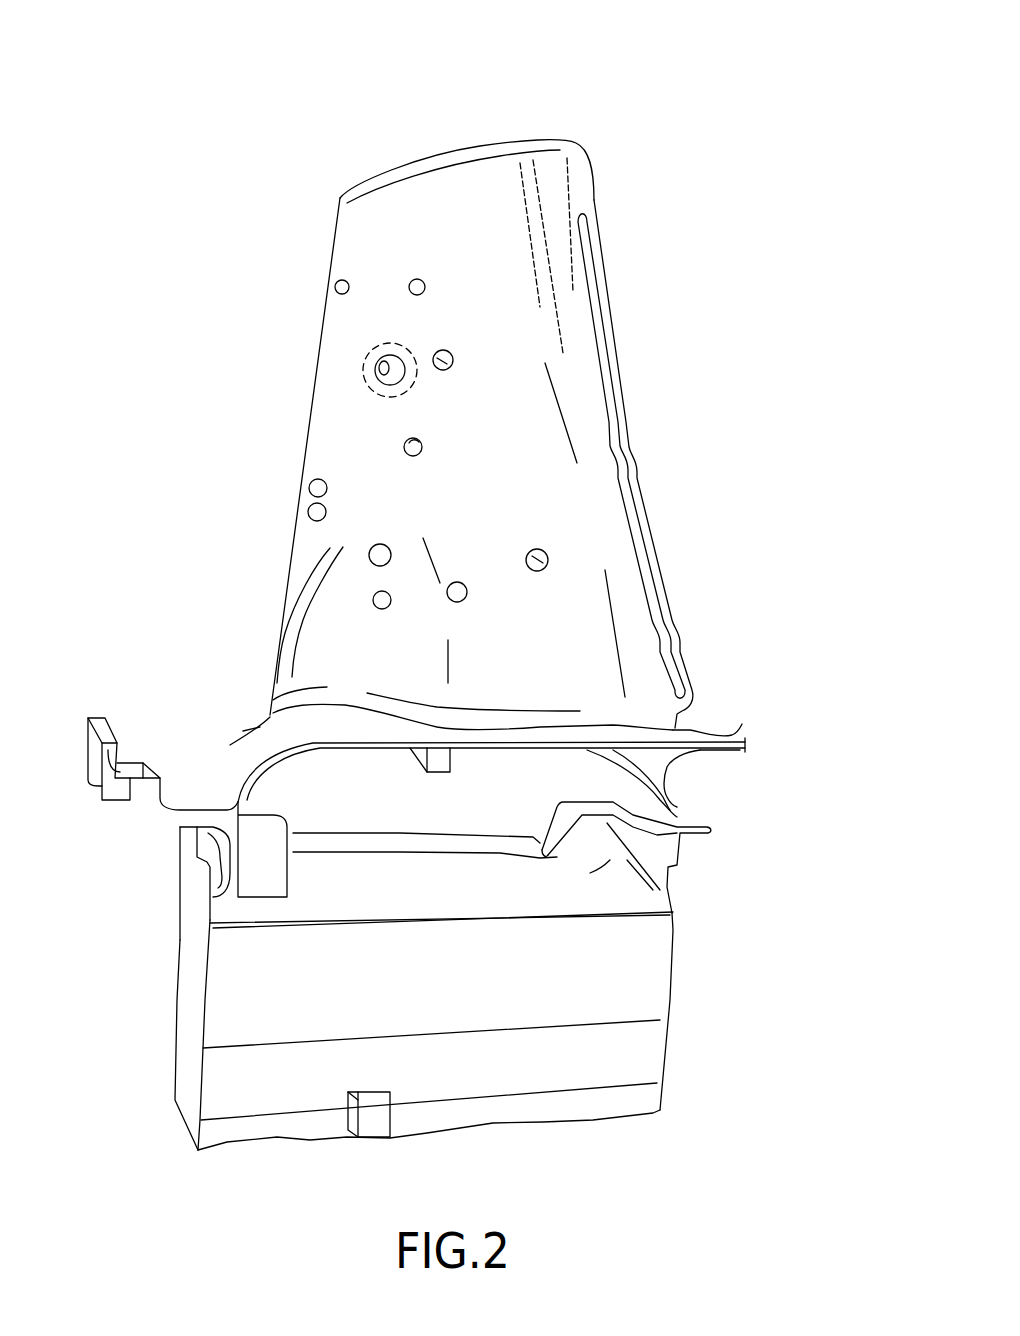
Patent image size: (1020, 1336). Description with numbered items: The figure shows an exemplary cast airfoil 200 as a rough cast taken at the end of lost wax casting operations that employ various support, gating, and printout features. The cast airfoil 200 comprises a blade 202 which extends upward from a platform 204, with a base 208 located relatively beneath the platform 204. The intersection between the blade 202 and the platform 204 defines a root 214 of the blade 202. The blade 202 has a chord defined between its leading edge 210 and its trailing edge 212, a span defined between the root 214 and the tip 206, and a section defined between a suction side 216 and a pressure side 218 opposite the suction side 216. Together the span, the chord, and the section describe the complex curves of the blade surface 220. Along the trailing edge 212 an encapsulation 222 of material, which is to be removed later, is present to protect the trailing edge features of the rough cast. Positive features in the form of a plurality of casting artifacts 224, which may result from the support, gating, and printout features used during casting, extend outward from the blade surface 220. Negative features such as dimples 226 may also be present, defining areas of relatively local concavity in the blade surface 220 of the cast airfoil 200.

The cast airfoil 200 is at (672, 83).
The blade 202 is at (594, 183).
The platform 204 is at (735, 737).
The tip 206 is at (447, 155).
The base 208 is at (462, 1004).
The leading edge 210 is at (320, 337).
The trailing edge 212 is at (606, 318).
The root 214 is at (267, 702).
The suction side 216 is at (343, 432).
The pressure side 218 is at (627, 384).
The blade surface 220 is at (497, 501).
The encapsulation 222 is at (647, 524).
The casting artifacts 224 is at (338, 281).
The dimples 226 is at (410, 341).